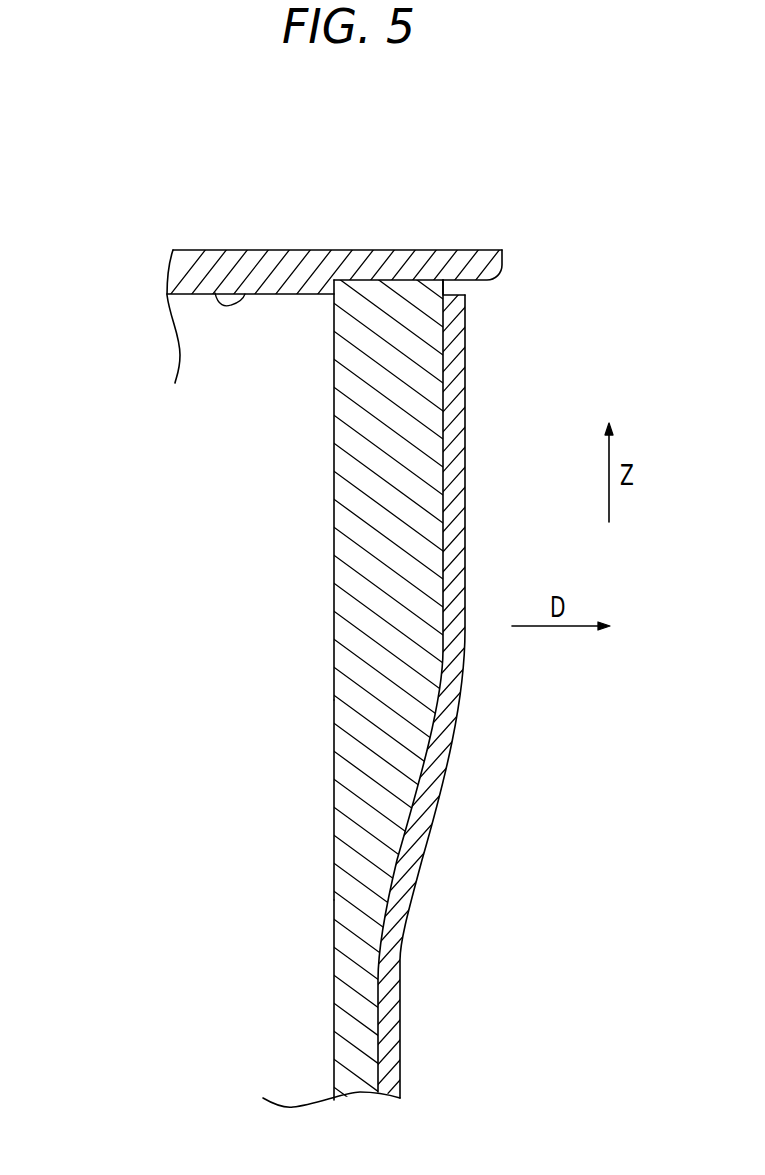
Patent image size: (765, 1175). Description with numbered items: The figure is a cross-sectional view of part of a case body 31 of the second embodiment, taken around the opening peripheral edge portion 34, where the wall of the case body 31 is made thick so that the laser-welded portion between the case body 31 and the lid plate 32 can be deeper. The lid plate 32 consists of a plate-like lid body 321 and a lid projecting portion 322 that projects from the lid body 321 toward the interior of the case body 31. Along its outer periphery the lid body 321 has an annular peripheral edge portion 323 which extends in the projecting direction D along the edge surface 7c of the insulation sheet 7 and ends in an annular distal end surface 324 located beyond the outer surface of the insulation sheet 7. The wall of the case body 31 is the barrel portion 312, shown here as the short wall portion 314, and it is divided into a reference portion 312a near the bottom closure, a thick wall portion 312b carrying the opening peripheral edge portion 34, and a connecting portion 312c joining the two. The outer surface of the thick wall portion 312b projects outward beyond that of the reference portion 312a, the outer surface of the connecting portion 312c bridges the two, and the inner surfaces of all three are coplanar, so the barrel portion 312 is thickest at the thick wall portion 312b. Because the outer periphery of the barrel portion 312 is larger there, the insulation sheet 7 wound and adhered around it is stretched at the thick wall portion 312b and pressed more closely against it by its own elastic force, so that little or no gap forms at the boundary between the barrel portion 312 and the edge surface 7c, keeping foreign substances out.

The lid plate 32 is at (307, 153).
The lid body 321 is at (282, 272).
The lid projecting portion 322 is at (215, 293).
The peripheral edge portion 323 is at (471, 243).
The distal end surface 324 is at (503, 258).
The opening peripheral edge portion 34 is at (421, 272).
The case body 31 is at (312, 421).
The barrel portion 312 is at (214, 690).
The short wall portion 314 is at (167, 772).
The reference portion 312a is at (345, 1017).
The thick wall portion 312b is at (334, 537).
The connecting portion 312c is at (368, 817).
The insulation sheet 7 is at (463, 392).
The edge surface 7c is at (464, 290).